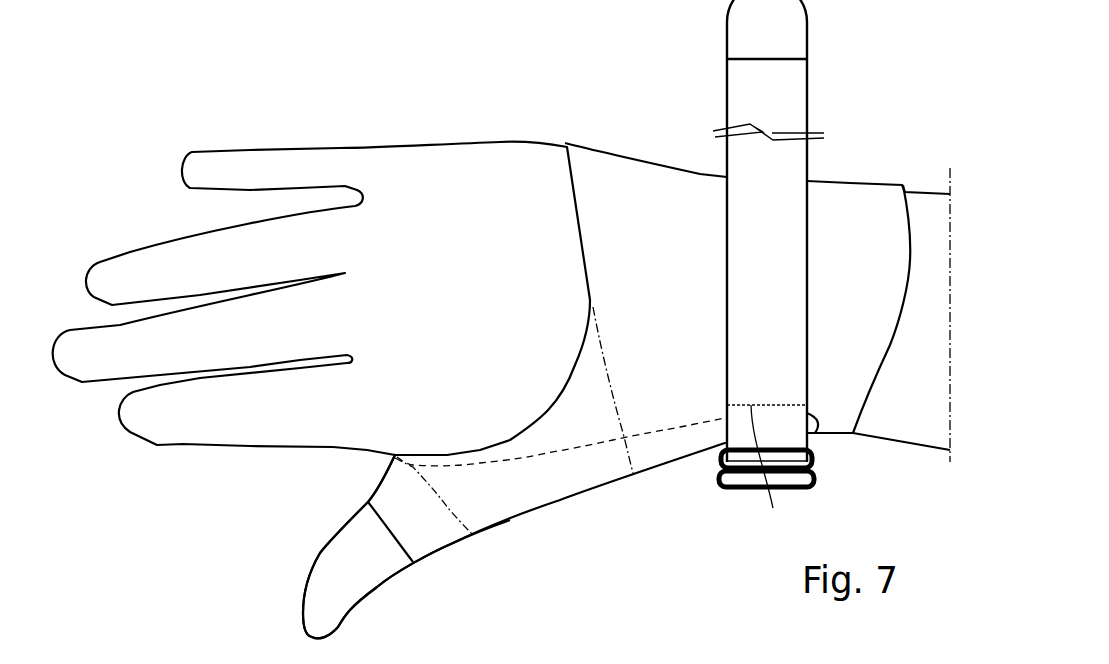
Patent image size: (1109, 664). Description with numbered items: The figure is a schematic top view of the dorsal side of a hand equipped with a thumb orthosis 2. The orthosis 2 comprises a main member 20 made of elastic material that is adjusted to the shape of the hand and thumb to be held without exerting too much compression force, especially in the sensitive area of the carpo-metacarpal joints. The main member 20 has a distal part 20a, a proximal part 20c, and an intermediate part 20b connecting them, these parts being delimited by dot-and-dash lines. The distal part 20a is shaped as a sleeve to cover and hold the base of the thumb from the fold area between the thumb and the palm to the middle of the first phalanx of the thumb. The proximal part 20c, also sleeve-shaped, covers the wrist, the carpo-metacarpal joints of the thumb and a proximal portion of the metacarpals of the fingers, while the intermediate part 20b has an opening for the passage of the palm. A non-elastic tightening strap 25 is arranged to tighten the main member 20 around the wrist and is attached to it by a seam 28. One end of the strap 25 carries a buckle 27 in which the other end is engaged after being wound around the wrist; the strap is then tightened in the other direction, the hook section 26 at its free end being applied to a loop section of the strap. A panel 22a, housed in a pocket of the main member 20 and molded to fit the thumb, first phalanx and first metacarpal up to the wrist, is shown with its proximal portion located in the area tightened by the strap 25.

The thumb orthosis 2 is at (785, 284).
The main member 20 is at (641, 152).
The distal part 20a is at (453, 537).
The intermediate part 20b is at (485, 517).
The proximal part 20c is at (845, 420).
The panel 22a is at (638, 448).
The tightening strap 25 is at (727, 75).
The hook section 26 is at (743, 32).
The buckle 27 is at (733, 490).
The seam 28 is at (769, 473).